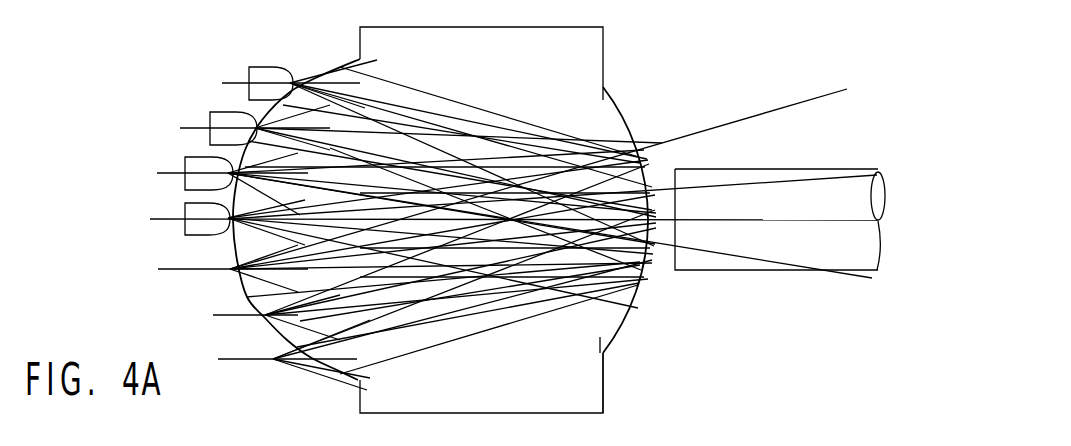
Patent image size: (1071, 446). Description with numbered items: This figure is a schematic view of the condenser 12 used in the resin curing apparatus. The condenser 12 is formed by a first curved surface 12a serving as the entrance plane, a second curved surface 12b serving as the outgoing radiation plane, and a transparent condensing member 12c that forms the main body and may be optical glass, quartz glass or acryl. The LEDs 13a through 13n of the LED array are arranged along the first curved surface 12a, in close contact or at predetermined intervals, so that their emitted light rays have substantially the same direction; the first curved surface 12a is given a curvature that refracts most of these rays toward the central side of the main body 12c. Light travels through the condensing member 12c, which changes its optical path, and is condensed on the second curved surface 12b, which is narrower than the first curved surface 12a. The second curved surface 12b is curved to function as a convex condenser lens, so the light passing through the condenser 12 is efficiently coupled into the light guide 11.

The light guide 11 is at (712, 263).
The condenser 12 is at (590, 56).
The first curved surface 12a is at (247, 297).
The second curved surface 12b is at (628, 118).
The condensing member 12c is at (598, 379).
The LED 13a is at (267, 75).
The LED 13n is at (245, 362).